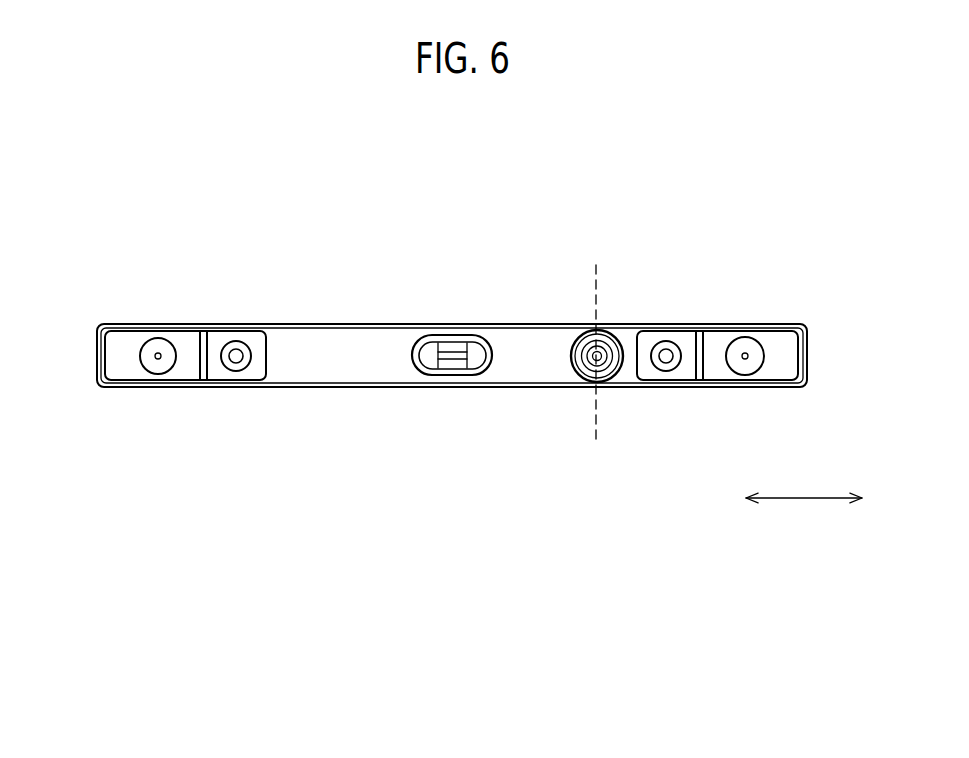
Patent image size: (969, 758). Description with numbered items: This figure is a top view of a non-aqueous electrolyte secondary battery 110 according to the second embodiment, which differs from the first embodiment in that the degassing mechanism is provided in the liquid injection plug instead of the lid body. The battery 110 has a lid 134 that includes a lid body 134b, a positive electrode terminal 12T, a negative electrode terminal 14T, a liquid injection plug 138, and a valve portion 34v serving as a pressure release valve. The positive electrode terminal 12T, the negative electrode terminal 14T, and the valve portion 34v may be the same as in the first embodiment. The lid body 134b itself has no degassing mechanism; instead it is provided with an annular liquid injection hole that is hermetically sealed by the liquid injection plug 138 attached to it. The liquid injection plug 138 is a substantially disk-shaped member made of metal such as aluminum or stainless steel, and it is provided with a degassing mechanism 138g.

The non-aqueous electrolyte secondary battery 110 is at (780, 240).
The lid 134 is at (108, 320).
The lid body 134b is at (355, 373).
The positive electrode terminal 12T is at (240, 372).
The negative electrode terminal 14T is at (668, 372).
The valve portion 34v is at (447, 310).
The liquid injection plug 138 is at (573, 310).
The degassing mechanism 138g is at (558, 307).